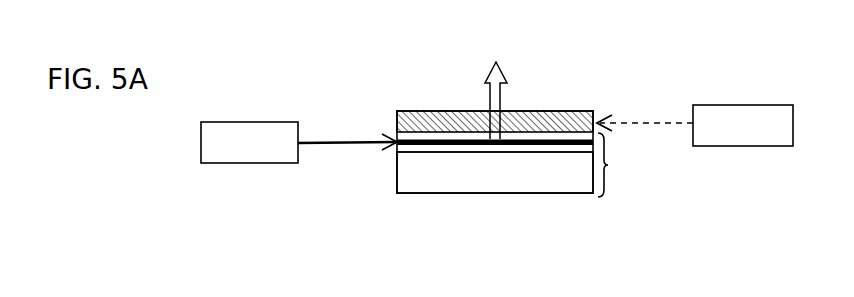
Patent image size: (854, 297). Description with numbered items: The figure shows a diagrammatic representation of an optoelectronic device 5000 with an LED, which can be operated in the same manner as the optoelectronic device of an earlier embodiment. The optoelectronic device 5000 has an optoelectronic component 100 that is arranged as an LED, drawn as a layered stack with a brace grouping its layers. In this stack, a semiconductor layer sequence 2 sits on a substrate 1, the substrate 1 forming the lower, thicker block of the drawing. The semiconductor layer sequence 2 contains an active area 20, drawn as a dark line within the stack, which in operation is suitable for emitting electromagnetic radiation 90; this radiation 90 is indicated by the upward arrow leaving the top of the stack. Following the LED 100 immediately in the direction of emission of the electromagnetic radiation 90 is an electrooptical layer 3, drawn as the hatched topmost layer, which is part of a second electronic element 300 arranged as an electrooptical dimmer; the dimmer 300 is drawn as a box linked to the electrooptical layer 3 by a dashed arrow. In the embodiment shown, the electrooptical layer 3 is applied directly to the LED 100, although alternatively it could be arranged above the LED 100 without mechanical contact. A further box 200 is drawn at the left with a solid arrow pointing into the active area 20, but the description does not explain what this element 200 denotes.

The optoelectronic device 5000 is at (372, 56).
The substrate 1 is at (487, 187).
The semiconductor layer sequence 2 is at (575, 152).
The electrooptical layer 3 is at (561, 125).
The active area 20 is at (520, 145).
The electromagnetic radiation 90 is at (498, 62).
The optoelectronic component 100 is at (617, 163).
The first light source 200 is at (231, 157).
The second electronic element 300 is at (726, 141).